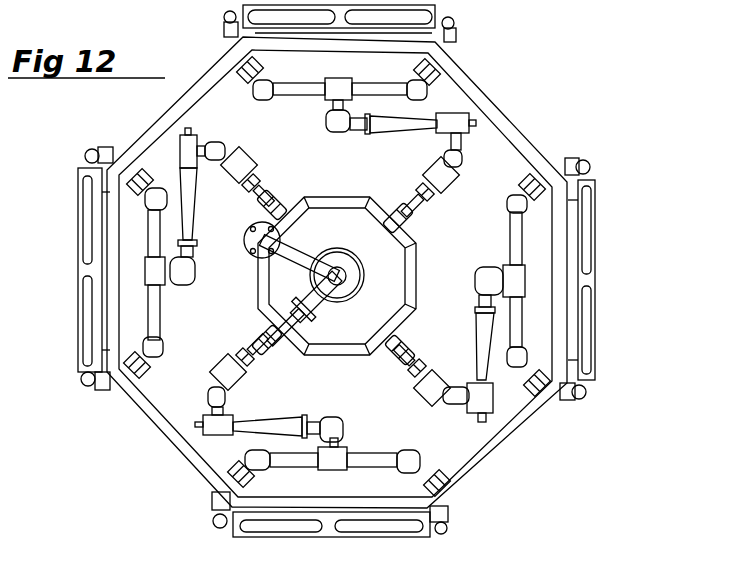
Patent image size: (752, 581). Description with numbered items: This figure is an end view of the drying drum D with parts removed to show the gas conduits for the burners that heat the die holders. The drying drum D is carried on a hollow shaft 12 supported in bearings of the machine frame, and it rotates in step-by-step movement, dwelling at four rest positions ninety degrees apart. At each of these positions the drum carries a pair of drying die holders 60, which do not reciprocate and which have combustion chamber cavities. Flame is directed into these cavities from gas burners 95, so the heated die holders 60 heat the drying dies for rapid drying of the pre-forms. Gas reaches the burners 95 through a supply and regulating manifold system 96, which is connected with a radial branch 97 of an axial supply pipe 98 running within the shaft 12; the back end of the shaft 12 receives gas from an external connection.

The hollow shaft 12 is at (349, 247).
The die holder 60 is at (597, 273).
The gas burner 95 is at (591, 172).
The supply and regulating manifold system 96 is at (417, 270).
The radial branch 97 is at (324, 302).
The axial supply pipe 98 is at (313, 266).
The drying drum D is at (576, 113).